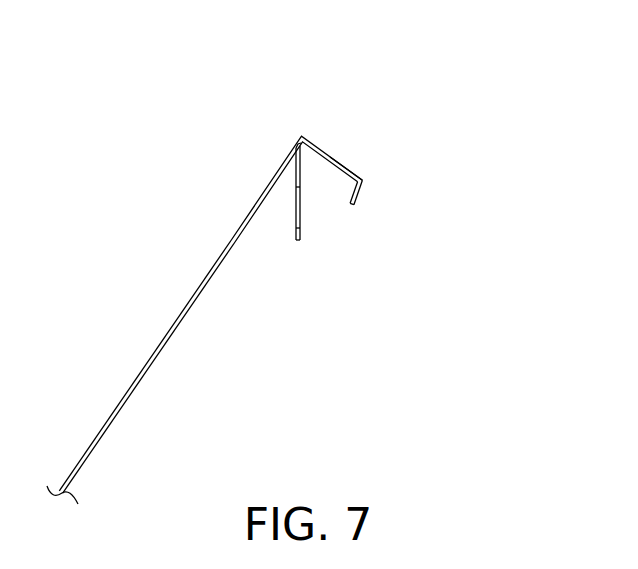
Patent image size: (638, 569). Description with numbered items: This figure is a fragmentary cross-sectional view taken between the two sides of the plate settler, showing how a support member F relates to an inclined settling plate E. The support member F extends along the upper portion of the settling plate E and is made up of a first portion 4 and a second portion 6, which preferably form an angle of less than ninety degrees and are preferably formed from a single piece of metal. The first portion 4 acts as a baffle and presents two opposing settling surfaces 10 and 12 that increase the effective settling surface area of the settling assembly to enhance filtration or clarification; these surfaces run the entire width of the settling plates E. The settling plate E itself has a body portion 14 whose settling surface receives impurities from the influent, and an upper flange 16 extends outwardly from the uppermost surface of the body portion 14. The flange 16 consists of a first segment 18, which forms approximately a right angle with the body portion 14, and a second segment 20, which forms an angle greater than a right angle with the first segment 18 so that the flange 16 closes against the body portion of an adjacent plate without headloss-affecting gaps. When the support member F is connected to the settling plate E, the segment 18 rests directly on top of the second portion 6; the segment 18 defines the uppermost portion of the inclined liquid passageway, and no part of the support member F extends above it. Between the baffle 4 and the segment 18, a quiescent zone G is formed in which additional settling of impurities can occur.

The first portion 4 is at (297, 205).
The second portion 6 is at (296, 168).
The settling surface 10 is at (294, 240).
The settling surface 12 is at (304, 240).
The body portion 14 is at (162, 341).
The upper flange 16 is at (363, 173).
The first segment 18 is at (347, 162).
The second segment 20 is at (357, 192).
The settling plate E is at (320, 131).
The support member F is at (298, 246).
The quiescent zone G is at (332, 204).